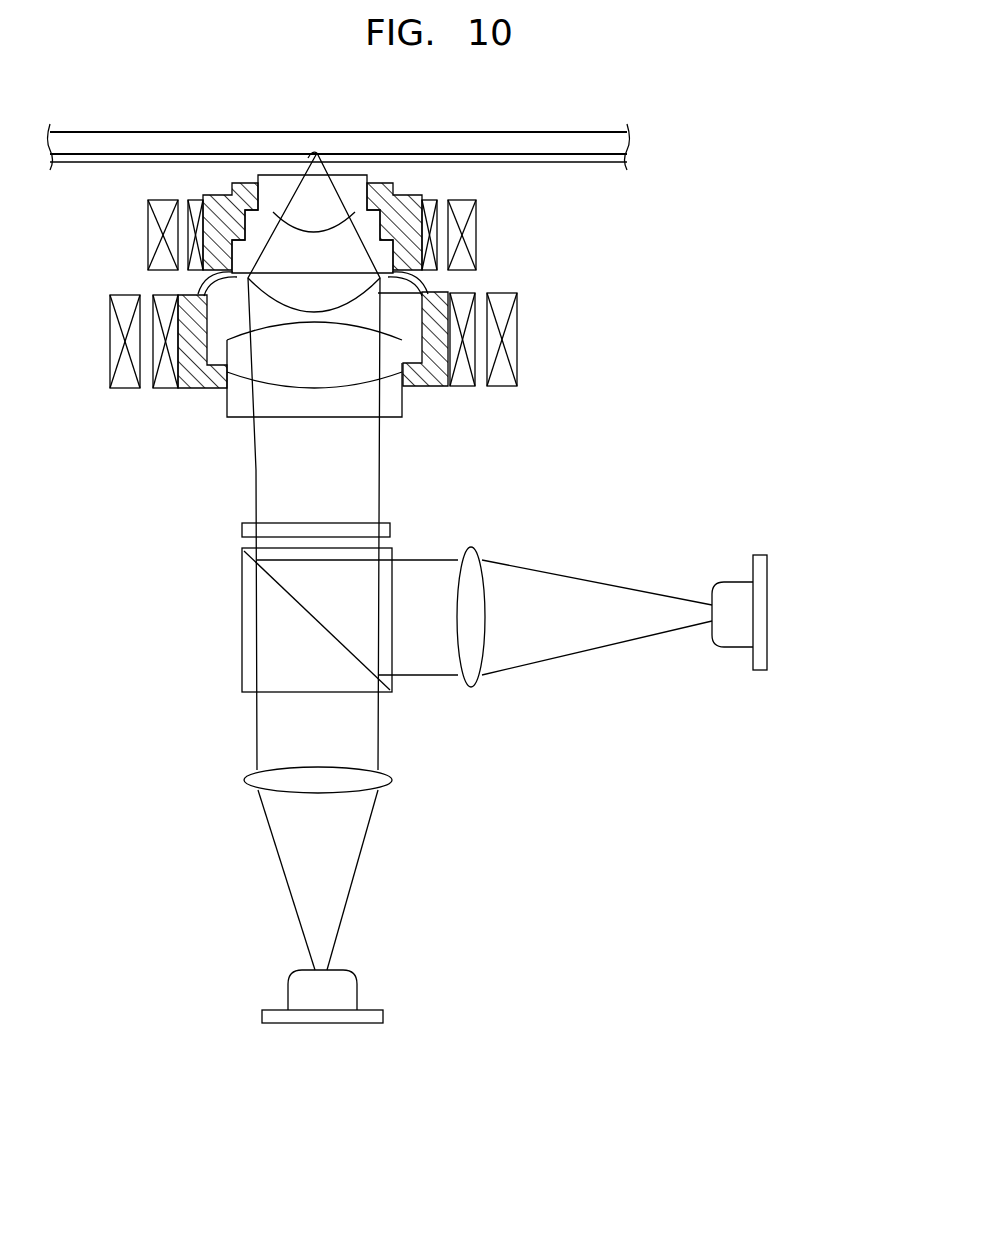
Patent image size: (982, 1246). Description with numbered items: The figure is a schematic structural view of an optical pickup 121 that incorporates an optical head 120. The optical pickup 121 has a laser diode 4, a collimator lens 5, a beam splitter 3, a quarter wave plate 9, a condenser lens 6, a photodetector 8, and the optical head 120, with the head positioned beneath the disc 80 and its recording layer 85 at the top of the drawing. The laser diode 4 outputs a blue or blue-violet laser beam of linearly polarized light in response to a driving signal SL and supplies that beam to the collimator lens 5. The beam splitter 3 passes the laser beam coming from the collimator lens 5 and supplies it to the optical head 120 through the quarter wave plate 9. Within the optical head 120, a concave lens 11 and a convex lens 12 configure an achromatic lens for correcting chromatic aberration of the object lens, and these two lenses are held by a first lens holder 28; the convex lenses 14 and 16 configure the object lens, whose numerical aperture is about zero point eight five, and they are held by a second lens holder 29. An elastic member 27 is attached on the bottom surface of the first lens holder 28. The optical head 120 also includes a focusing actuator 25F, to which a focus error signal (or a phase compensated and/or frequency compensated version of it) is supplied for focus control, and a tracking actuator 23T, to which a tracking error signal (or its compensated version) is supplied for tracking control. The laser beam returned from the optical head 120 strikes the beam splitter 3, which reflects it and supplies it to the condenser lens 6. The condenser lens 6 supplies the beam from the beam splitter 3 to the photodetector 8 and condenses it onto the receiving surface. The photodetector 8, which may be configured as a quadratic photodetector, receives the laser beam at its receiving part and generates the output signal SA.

The optical disc 80 is at (528, 131).
The recording layer 85 is at (412, 153).
The convex lens 16 is at (235, 182).
The second lens holder 29 is at (402, 190).
The focusing actuator 25F is at (162, 205).
The elastic member 27 is at (198, 288).
The tracking actuator 23T is at (127, 392).
The first lens holder 28 is at (426, 387).
The concave lens 11 is at (238, 398).
The convex lens 12 is at (390, 342).
The convex lens 14 is at (238, 280).
The 1/4 wave plate 9 is at (242, 530).
The beam splitter 3 is at (242, 577).
The condenser lens 6 is at (470, 688).
The photodetector 8 is at (764, 671).
The output signal SA is at (768, 612).
The collimator lens 5 is at (246, 779).
The laser diode 4 is at (262, 1017).
The driving signal SL is at (322, 1025).
The optical head 120 is at (495, 252).
The optical pickup 121 is at (630, 466).